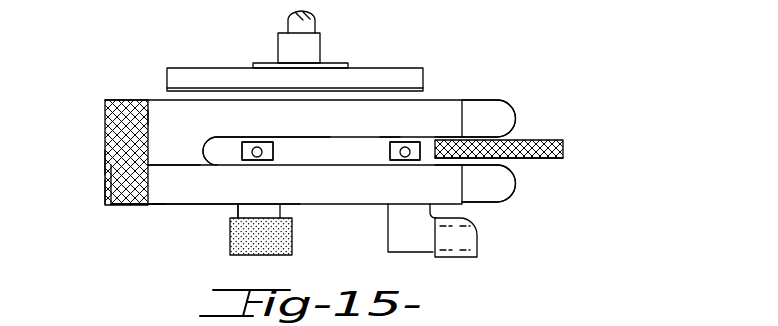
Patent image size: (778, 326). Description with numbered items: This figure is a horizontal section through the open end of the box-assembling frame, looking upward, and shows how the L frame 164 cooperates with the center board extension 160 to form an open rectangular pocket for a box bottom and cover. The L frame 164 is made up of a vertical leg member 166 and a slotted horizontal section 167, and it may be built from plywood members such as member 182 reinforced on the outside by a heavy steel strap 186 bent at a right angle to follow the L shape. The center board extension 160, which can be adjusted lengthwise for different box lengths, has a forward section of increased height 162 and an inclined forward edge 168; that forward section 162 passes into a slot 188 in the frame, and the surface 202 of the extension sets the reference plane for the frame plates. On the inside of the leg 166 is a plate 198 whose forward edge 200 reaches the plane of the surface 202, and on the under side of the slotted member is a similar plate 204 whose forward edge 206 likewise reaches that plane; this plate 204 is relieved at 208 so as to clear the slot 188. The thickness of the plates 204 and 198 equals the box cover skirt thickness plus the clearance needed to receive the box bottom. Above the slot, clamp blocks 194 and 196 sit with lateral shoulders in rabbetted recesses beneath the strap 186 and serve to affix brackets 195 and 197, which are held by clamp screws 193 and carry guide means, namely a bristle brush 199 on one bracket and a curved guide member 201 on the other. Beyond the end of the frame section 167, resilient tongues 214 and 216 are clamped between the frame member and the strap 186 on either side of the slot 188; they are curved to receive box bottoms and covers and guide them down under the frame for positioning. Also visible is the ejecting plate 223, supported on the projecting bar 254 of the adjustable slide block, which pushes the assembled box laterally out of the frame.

The center board extension 160 is at (563, 146).
The forward section of increased height 162 is at (443, 165).
The L frame 164 is at (108, 155).
The vertical leg member 166 is at (110, 183).
The slotted horizontal section 167 is at (195, 204).
The inclined forward edge 168 is at (438, 137).
The plywood member 182 is at (127, 102).
The heavy steel strap 186 is at (105, 127).
The slot 188 is at (385, 138).
The clamp screws 193 is at (253, 143).
The clamp block 194 is at (268, 145).
The bracket 195 is at (238, 210).
The clamp block 196 is at (390, 148).
The bracket 197 is at (397, 217).
The plate 198 is at (150, 125).
The bristle brush 199 is at (230, 245).
The forward edge 200 is at (152, 165).
The curved guide member 201 is at (463, 238).
The surface 202 is at (532, 160).
The plate 204 is at (182, 155).
The forward edge 206 is at (162, 165).
The relief 208 is at (303, 137).
The resilient tongue 214 is at (503, 108).
The resilient tongue 216 is at (497, 188).
The ejecting plate 223 is at (210, 73).
The projecting bar 254 is at (290, 25).